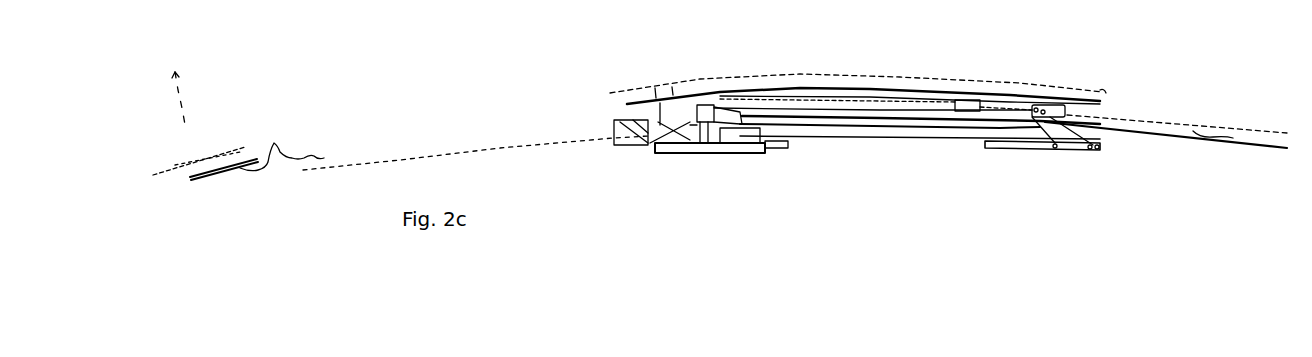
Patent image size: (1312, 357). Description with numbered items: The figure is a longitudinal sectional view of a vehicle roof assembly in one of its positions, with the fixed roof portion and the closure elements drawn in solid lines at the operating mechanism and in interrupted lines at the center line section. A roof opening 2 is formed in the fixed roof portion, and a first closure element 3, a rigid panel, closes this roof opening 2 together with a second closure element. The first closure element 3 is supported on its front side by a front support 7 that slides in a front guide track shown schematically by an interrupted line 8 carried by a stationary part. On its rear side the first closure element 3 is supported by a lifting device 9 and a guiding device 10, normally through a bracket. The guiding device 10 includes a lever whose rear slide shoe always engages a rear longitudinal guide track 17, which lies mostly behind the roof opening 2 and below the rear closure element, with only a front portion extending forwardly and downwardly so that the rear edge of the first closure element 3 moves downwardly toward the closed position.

The roof opening 2 is at (297, 140).
The first closure element 3 is at (795, 90).
The front support 7 is at (724, 160).
The interrupted line 8 is at (363, 163).
The lifting device 9 is at (637, 157).
The guiding device 10 is at (1043, 155).
The rear longitudinal guide track 17 is at (898, 140).